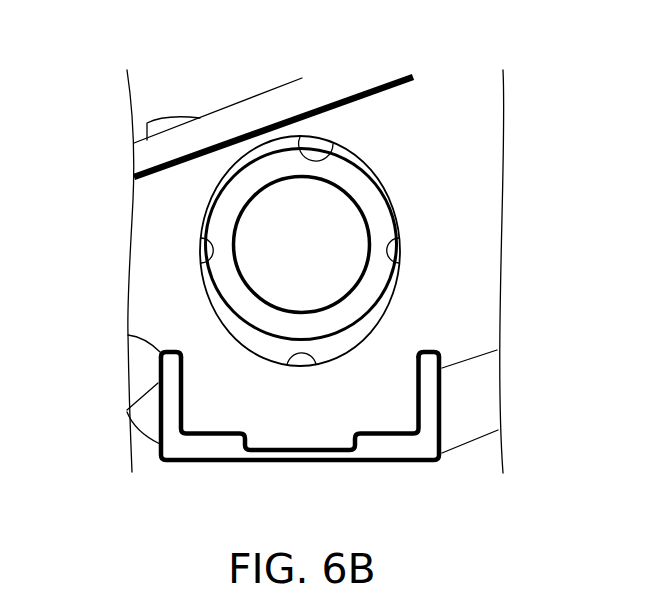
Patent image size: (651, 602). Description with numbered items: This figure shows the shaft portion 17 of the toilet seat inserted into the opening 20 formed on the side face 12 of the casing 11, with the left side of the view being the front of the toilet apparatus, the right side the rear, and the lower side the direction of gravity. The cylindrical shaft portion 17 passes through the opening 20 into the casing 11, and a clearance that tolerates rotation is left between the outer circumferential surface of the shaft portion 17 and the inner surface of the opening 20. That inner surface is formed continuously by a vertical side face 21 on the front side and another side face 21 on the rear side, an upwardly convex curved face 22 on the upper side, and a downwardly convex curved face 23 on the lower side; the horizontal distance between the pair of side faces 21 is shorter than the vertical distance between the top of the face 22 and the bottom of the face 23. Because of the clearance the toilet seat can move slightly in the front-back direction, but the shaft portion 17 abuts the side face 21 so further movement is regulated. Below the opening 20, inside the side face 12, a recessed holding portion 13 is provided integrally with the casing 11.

The casing 11 is at (215, 110).
The side face 12 is at (472, 143).
The holding portion 13 is at (393, 448).
The shaft portion 17 is at (243, 182).
The opening 20 is at (323, 225).
The side face 21 is at (200, 260).
The face on the upper side 22 is at (333, 147).
The face on the lower side 23 is at (316, 364).